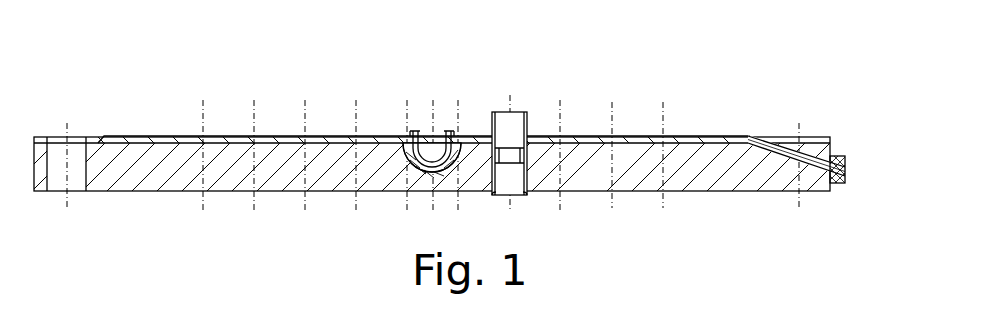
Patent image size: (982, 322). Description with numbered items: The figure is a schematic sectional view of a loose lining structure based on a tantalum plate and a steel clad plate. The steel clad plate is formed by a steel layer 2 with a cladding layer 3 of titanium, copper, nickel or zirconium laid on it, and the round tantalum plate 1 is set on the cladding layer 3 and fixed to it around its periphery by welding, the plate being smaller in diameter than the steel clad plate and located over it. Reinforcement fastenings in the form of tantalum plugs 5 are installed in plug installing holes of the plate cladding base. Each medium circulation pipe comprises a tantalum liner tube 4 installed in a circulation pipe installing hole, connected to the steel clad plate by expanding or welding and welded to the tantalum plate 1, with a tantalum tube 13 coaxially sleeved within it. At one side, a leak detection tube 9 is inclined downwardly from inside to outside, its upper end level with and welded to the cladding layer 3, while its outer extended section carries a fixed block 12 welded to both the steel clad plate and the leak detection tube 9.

The tantalum plate 1 is at (115, 137).
The steel layer 2 is at (227, 162).
The cladding layer 3 is at (332, 137).
The tantalum liner tube 4 is at (497, 114).
The tantalum plug 5 is at (414, 131).
The leak detection tube 9 is at (756, 138).
The fixed block 12 is at (841, 156).
The tantalum tube 13 is at (527, 114).